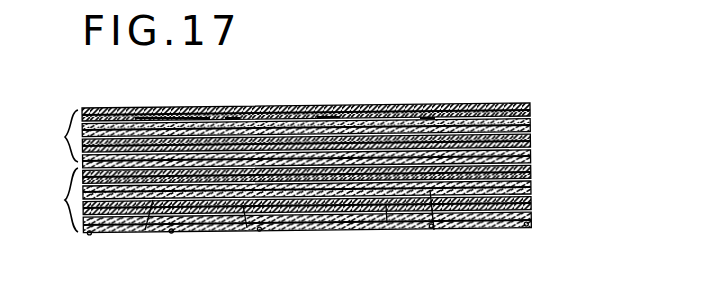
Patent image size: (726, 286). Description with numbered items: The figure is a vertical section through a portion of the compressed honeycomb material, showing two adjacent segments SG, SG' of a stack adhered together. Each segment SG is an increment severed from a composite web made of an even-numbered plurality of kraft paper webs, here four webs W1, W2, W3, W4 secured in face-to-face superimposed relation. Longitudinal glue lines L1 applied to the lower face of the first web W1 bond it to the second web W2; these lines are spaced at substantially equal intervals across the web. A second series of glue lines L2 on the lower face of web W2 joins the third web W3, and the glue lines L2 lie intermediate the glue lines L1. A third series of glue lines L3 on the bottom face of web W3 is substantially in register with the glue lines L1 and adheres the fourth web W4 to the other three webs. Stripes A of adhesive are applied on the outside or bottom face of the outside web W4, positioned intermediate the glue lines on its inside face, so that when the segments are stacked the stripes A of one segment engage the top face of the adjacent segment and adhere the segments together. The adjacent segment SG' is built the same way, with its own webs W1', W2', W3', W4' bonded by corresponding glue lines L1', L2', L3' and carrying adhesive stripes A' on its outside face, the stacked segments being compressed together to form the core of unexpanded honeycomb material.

The web W1 is at (344, 91).
The web W2 is at (346, 112).
The web W3 is at (340, 132).
The web W4 is at (346, 153).
The first web layer of second group W1' is at (343, 171).
The second web layer of second group W2' is at (343, 193).
The third web layer of second group W3' is at (341, 214).
The fourth web layer of second group W4' is at (335, 241).
The glue stripes L1 is at (172, 91).
The glue lines L2 is at (249, 92).
The glue lines L3 is at (343, 92).
The adhesive stripes A is at (434, 108).
The first bonding line of second group L1' is at (122, 235).
The second bonding line of second group L2' is at (221, 239).
The third bonding line of second group L3' is at (342, 239).
The bonding region of second group A' is at (466, 234).
The segment SG is at (48, 136).
The second sub-group of webs SG' is at (48, 200).